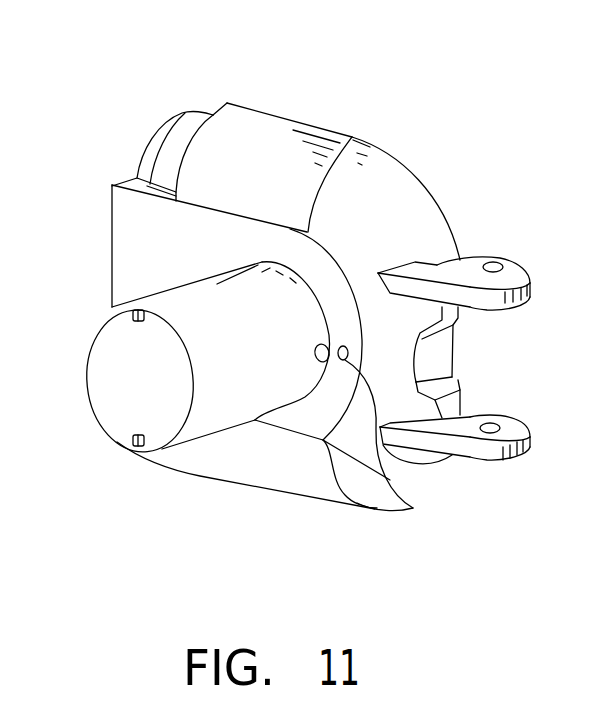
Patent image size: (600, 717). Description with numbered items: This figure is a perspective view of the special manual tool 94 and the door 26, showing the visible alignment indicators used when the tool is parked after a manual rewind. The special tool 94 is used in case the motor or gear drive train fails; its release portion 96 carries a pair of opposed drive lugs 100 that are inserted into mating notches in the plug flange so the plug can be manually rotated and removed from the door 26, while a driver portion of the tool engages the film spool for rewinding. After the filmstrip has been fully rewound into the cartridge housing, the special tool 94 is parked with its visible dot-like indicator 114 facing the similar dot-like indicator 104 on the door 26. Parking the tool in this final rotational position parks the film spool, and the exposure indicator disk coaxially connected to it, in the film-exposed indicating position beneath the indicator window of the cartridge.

The door 26 is at (308, 124).
The special manual tool 94 is at (162, 293).
The release portion 96 is at (100, 385).
The drive lugs 100 is at (141, 322).
The visible dot-like indicator 114 is at (316, 353).
The visible dot-like indicator 104 is at (413, 508).